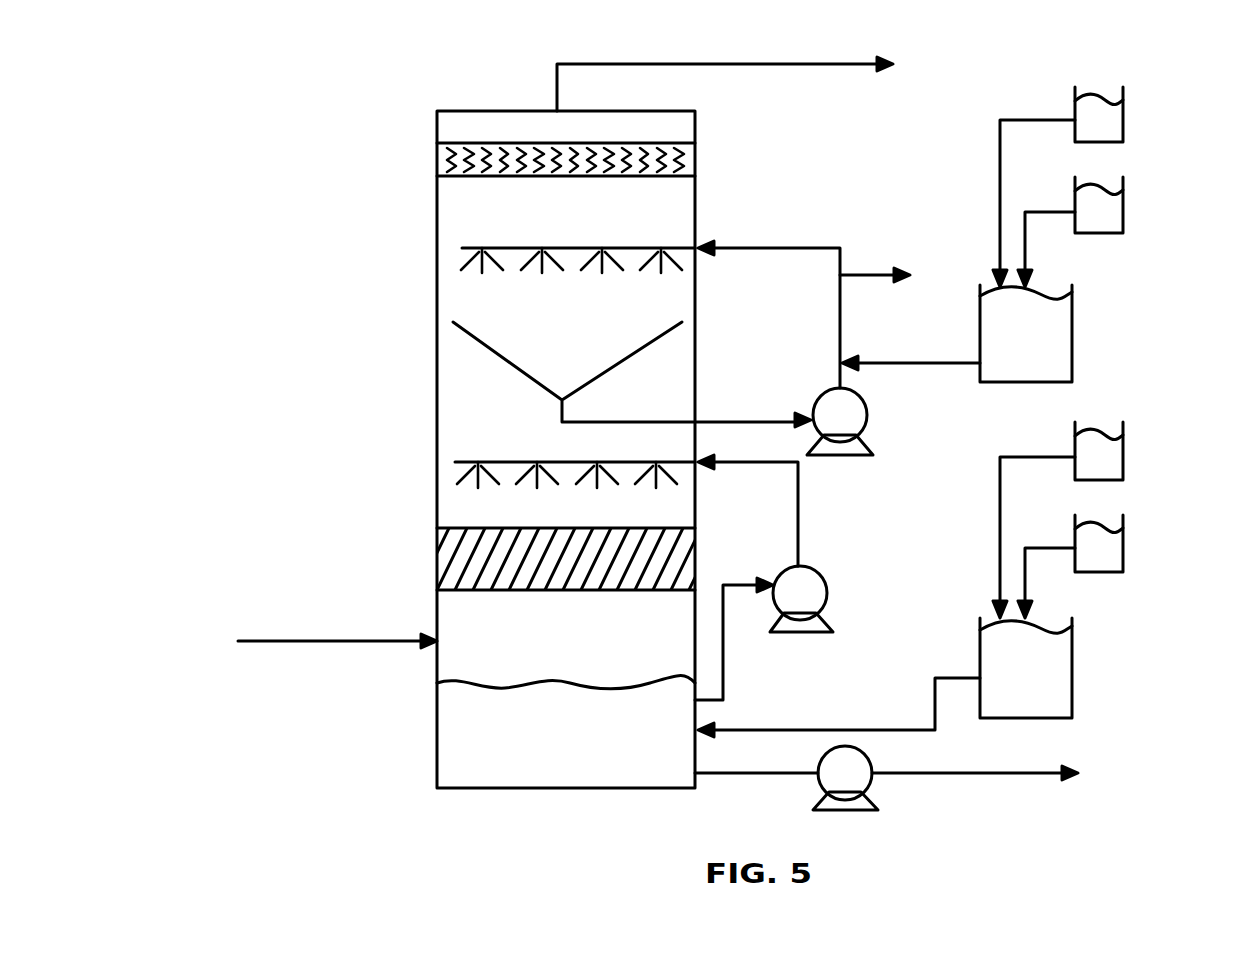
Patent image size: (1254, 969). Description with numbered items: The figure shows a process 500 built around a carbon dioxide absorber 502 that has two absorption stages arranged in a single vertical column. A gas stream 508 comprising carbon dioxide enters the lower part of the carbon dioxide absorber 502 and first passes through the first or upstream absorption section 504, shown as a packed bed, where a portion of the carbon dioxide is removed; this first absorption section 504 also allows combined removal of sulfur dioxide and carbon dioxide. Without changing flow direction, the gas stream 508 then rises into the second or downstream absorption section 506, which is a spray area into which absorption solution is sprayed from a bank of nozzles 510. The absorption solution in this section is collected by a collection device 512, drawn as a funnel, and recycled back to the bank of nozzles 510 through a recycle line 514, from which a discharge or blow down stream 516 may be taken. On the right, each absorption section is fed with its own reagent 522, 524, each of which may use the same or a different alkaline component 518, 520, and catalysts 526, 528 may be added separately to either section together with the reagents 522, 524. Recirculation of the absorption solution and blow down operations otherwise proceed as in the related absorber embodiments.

The process 500 is at (236, 293).
The carbon dioxide absorber 502 is at (478, 110).
The first absorption section 504 is at (450, 525).
The second absorption section 506 is at (545, 303).
The gas stream 508 is at (353, 641).
The bank of nozzles 510 is at (490, 246).
The collection device 512 is at (510, 365).
The recycle line 514 is at (755, 248).
The blow down stream 516 is at (853, 273).
The alkaline component 518 is at (1108, 468).
The alkaline component 520 is at (1103, 128).
The reagent 522 is at (1052, 695).
The reagent 524 is at (1037, 360).
The catalyst 526 is at (1103, 555).
The catalyst 528 is at (1103, 220).